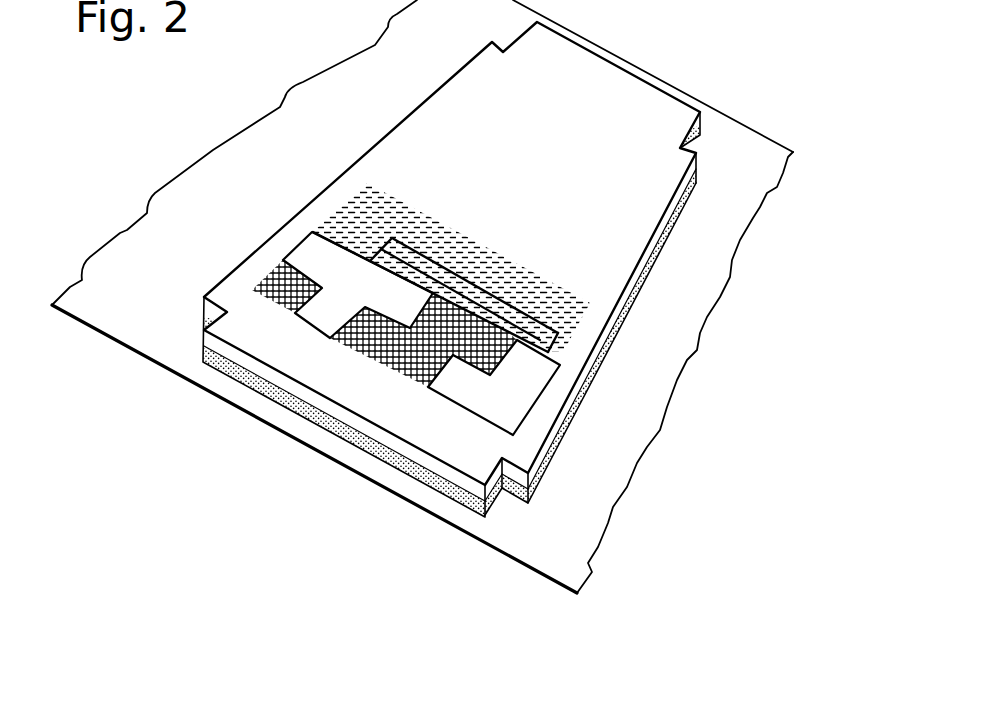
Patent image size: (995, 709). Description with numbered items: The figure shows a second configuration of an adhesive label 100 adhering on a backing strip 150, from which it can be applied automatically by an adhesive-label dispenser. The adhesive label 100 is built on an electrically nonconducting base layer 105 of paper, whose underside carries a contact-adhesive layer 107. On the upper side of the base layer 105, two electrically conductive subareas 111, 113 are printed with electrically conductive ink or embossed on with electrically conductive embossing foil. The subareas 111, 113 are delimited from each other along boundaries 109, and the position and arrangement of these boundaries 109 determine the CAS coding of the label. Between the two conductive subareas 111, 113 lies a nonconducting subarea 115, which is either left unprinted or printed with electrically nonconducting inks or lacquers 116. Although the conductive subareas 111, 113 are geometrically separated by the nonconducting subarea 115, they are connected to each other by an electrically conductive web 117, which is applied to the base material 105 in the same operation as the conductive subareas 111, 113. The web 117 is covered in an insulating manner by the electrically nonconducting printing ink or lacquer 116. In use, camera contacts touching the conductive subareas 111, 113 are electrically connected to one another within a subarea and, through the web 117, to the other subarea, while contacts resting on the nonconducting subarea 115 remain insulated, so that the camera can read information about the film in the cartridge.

The adhesive label 100 is at (589, 109).
The base layer 105 is at (665, 242).
The contact-adhesive layer 107 is at (634, 307).
The boundaries 109 is at (318, 324).
The electrically conductive subarea 111 is at (528, 389).
The electrically conductive subarea 113 is at (315, 256).
The nonconducting subarea 115 is at (388, 358).
The electrically nonconducting printing ink or lacquer 116 is at (372, 192).
The electrically conductive web 117 is at (467, 275).
The backing strip 150 is at (587, 531).